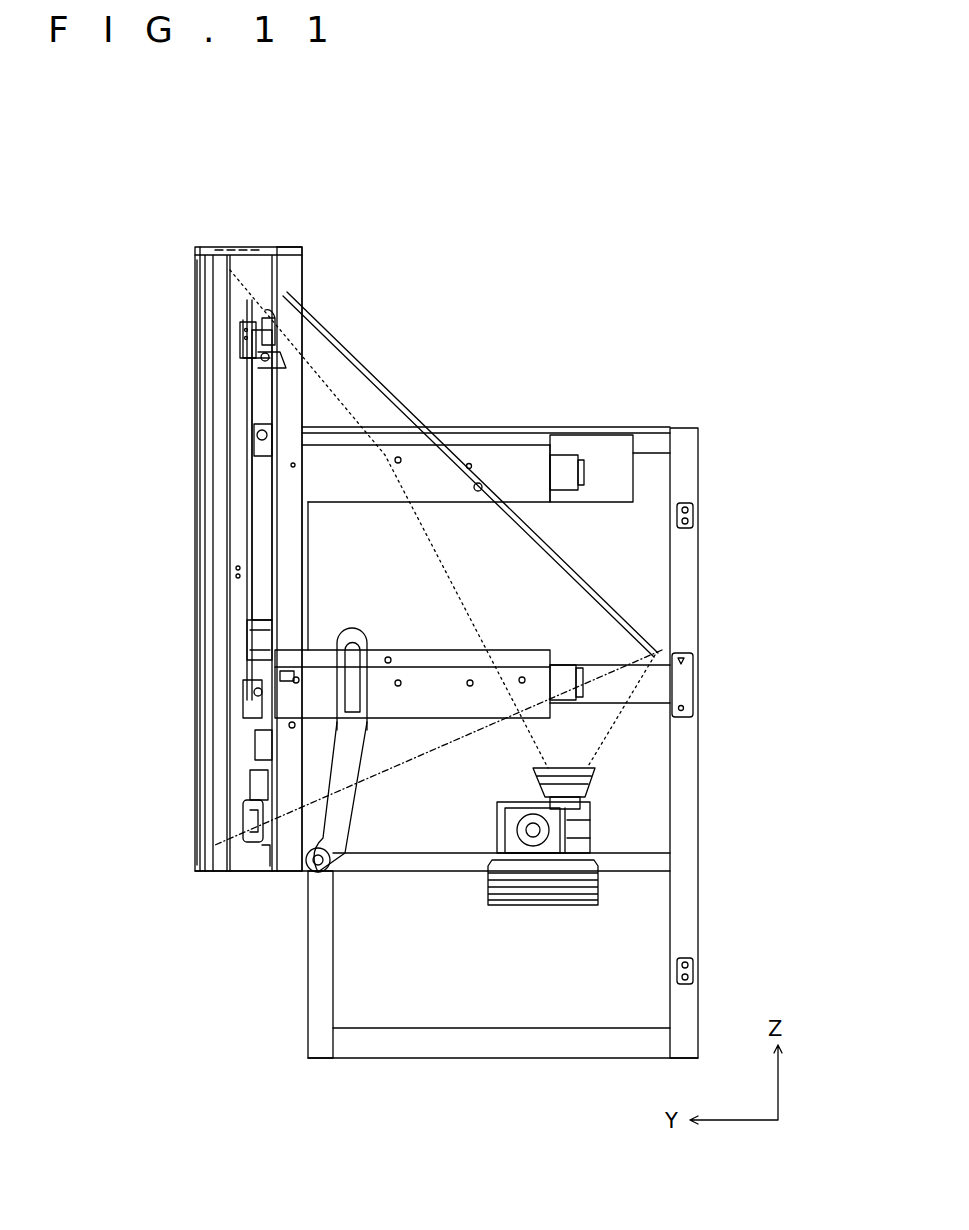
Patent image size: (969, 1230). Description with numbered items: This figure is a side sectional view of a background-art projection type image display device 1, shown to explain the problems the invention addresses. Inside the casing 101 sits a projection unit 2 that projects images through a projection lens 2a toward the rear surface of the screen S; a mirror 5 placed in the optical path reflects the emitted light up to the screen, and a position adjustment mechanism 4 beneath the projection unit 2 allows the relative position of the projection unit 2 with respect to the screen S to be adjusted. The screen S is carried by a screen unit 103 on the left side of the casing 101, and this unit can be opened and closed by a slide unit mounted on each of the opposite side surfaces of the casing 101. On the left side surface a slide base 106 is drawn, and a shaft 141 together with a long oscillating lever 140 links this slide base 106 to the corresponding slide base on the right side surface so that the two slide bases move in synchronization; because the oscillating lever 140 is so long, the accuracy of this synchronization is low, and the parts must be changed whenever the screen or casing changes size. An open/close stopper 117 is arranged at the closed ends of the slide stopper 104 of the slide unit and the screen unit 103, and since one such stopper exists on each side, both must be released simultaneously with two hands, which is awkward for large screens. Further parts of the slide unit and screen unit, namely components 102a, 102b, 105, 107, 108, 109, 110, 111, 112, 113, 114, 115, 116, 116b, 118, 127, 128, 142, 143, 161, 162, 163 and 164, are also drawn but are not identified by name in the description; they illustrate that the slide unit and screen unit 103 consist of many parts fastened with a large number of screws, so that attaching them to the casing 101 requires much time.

The projection type image display device 1 is at (606, 280).
The projection unit 2 is at (592, 830).
The projection lens 2a is at (600, 777).
The position adjustment mechanism 4 is at (598, 888).
The mirror 5 is at (597, 577).
The casing 101 is at (700, 468).
The upper support 102a is at (622, 457).
The lower support 102b is at (647, 680).
The screen unit 103 is at (188, 442).
The slide stopper 104 is at (450, 653).
The lower plate 105 is at (388, 658).
The slide base 106 is at (470, 447).
The upper holding member 107 is at (270, 335).
The pin 108 is at (270, 358).
The screen holding portion 109 is at (258, 320).
The lower holding member 110 is at (243, 808).
The guide member 111 is at (247, 784).
The bottom plate 112 is at (264, 862).
The roller 113 is at (270, 438).
The slider 114 is at (255, 684).
The rail 115 is at (262, 535).
The guide rail 116 is at (234, 523).
The guide rail lower portion 116b is at (253, 755).
The open/close stopper 117 is at (242, 719).
The shaft 118 is at (252, 702).
The adjustment screw 127 is at (585, 470).
The mirror holder 128 is at (567, 470).
The oscillating lever 140 is at (343, 815).
The shaft 141 is at (330, 864).
The guide slot member 142 is at (350, 640).
The slot 143 is at (362, 713).
The upper bracket 161 is at (527, 495).
The lower bracket 162 is at (447, 700).
The side plate 163 is at (308, 567).
The sensor 164 is at (260, 358).
The screen S is at (192, 597).